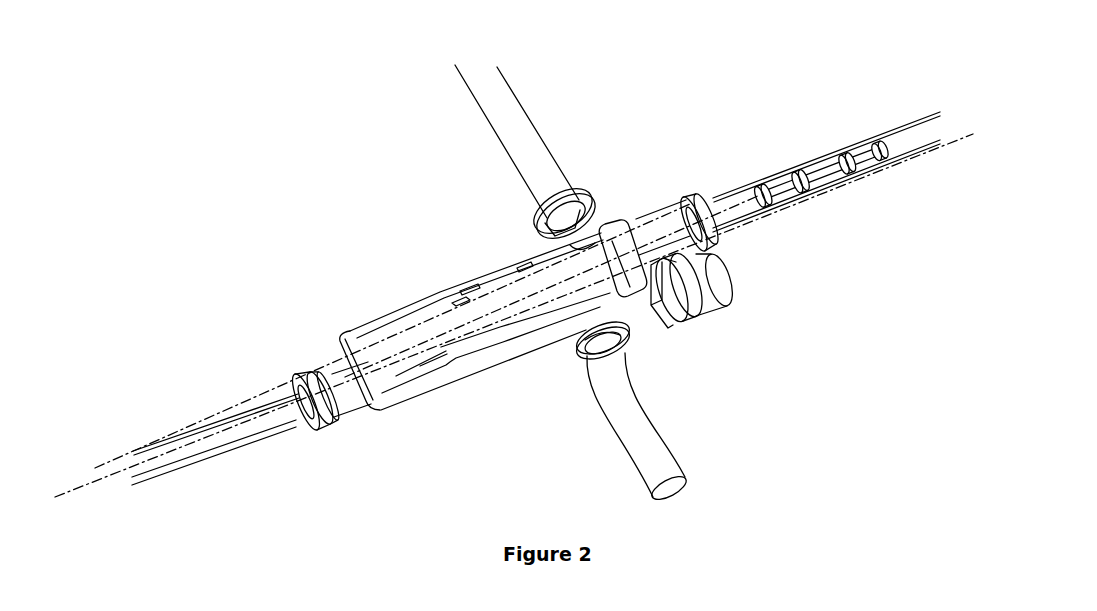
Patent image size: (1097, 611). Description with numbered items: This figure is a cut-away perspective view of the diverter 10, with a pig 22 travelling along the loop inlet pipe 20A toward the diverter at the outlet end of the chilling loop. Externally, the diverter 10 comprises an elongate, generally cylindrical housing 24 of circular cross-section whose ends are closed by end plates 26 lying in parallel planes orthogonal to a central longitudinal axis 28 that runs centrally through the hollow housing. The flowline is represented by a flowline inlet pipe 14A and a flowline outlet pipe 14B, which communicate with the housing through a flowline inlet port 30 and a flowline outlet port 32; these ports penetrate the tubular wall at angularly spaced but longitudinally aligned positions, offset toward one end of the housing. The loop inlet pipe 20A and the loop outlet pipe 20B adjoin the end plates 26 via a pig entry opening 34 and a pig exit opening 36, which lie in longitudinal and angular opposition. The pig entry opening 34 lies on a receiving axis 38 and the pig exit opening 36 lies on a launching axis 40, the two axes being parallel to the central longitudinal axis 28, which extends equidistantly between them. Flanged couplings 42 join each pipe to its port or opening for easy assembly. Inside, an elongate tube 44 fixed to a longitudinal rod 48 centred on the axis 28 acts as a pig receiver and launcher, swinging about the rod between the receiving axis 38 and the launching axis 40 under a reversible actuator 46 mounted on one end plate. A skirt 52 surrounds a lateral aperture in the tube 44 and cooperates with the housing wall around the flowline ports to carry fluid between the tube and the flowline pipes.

The diverter 10 is at (355, 288).
The flowline inlet pipe 14A is at (657, 447).
The flowline outlet pipe 14B is at (520, 127).
The loop inlet pipe 20A is at (905, 135).
The loop outlet pipe 20B is at (177, 468).
The pig 22 is at (818, 170).
The housing 24 is at (458, 368).
The end plates 26 is at (348, 357).
The central longitudinal axis 28 is at (102, 465).
The flowline inlet port 30 is at (607, 328).
The flowline outlet port 32 is at (572, 228).
The pig entry opening 34 is at (668, 222).
The pig exit opening 36 is at (342, 398).
The receiving axis 38 is at (487, 300).
The launching axis 40 is at (204, 437).
The flanged couplings 42 is at (317, 428).
The tube 44 is at (453, 302).
The actuator 46 is at (715, 288).
The rod 48 is at (398, 358).
The skirt 52 is at (592, 240).